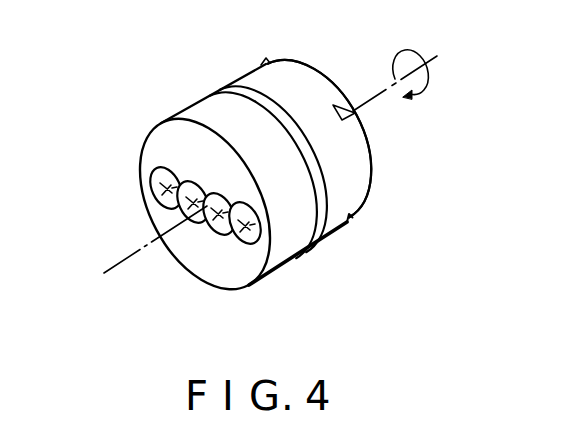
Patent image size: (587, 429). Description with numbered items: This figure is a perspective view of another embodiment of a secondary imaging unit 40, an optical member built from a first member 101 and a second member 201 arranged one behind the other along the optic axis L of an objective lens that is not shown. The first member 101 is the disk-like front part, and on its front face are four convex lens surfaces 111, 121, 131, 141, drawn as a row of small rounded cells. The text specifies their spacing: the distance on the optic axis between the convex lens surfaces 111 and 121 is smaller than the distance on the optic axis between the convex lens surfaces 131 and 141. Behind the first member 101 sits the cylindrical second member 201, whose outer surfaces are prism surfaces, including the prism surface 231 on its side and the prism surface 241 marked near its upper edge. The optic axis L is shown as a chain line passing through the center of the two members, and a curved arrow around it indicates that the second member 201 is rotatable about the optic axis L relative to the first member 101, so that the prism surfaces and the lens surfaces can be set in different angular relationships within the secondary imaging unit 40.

The secondary imaging unit 40 is at (196, 103).
The first member 101 is at (290, 260).
The second member 201 is at (350, 221).
The prism surface 231 is at (370, 143).
The prism surface 241 is at (265, 59).
The convex lens surface 111 is at (217, 235).
The convex lens surface 121 is at (205, 215).
The convex lens surface 131 is at (245, 245).
The convex lens surface 141 is at (179, 150).
The optic axis L is at (375, 97).